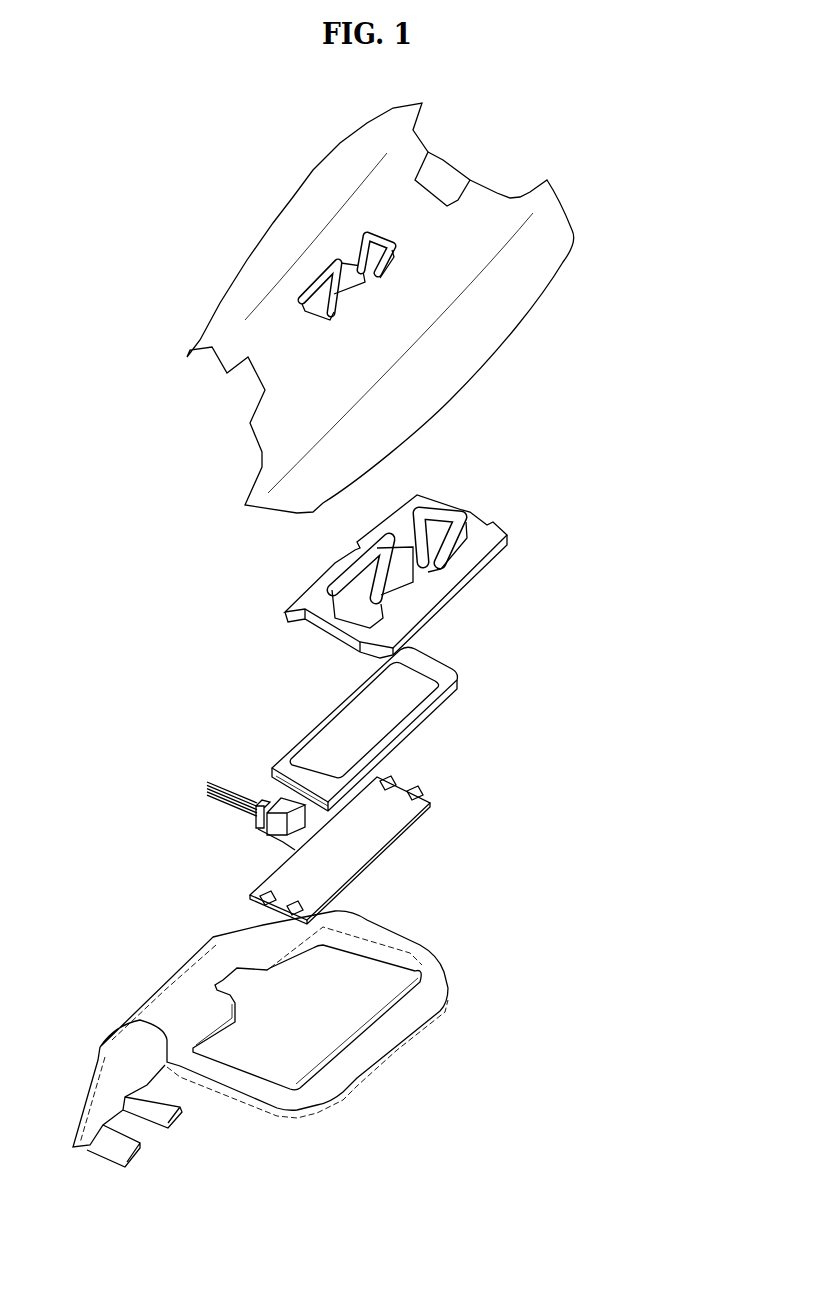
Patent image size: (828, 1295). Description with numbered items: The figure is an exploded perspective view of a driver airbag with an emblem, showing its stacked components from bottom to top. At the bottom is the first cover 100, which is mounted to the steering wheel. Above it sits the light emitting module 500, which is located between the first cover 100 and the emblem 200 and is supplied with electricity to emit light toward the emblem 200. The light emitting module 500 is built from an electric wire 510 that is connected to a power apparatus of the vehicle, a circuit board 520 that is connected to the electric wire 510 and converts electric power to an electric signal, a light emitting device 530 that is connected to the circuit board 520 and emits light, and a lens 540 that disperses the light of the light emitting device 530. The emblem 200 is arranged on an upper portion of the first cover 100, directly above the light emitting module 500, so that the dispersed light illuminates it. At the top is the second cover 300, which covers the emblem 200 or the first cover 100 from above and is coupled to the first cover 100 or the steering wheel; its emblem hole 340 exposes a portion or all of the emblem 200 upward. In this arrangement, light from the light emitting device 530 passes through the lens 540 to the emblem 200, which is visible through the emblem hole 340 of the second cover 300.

The first cover 100 is at (370, 1043).
The emblem 200 is at (460, 558).
The second cover 300 is at (505, 286).
The emblem hole 340 is at (323, 273).
The light emitting module 500 is at (508, 683).
The electric wire 510 is at (208, 785).
The circuit board 520 is at (375, 830).
The light emitting device 530 is at (423, 792).
The lens 540 is at (342, 723).